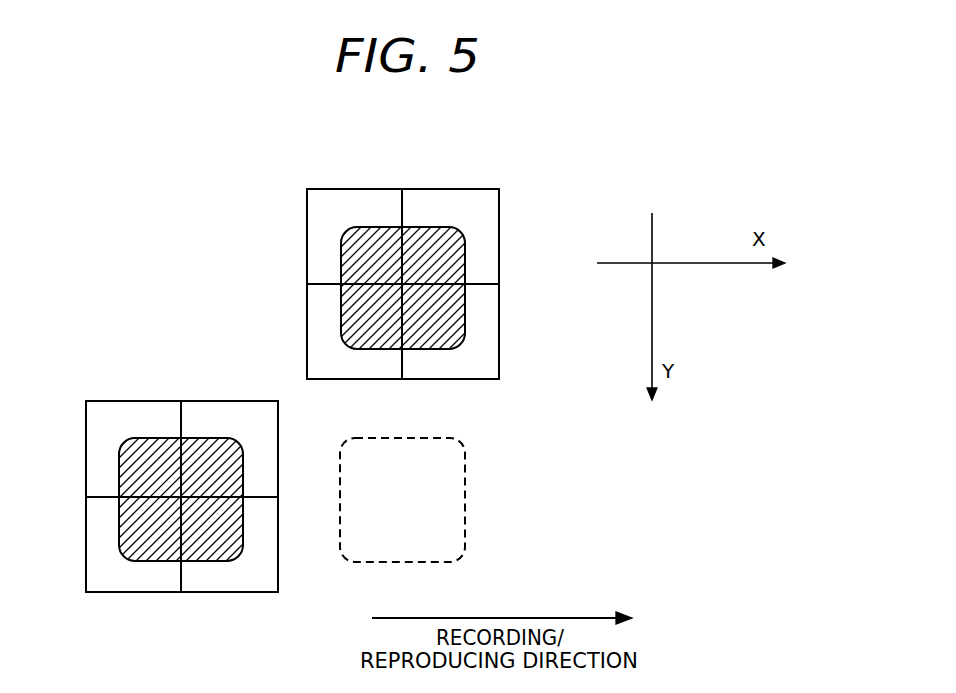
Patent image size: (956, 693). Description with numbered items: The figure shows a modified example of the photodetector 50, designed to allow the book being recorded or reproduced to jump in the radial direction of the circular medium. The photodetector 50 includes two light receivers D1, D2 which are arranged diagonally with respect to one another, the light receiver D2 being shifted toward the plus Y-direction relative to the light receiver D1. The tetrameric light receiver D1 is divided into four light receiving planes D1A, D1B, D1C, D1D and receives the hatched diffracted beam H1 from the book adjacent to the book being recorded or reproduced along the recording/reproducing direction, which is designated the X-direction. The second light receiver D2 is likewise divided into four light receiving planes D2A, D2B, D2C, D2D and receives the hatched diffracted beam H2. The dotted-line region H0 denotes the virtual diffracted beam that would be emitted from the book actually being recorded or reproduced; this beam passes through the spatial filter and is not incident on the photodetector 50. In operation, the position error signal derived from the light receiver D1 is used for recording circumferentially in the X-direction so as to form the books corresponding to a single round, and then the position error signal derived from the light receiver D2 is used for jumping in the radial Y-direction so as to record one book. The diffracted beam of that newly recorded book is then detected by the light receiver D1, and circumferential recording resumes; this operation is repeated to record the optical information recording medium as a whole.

The photodetector 50 is at (189, 216).
The tetrameric light receiver D1 is at (162, 401).
The light receiving plane D1A is at (254, 416).
The light receiving plane D1B is at (255, 583).
The light receiving plane D1C is at (108, 583).
The light receiving plane D1D is at (107, 416).
The light receiver D2 is at (383, 189).
The light receiving plane D2A is at (474, 204).
The light receiving plane D2B is at (478, 360).
The light receiving plane D2C is at (331, 360).
The light receiving plane D2D is at (328, 204).
The diffracted beam H1 is at (119, 475).
The diffracted beam H2 is at (341, 262).
The virtual diffracted beam H0 is at (465, 500).